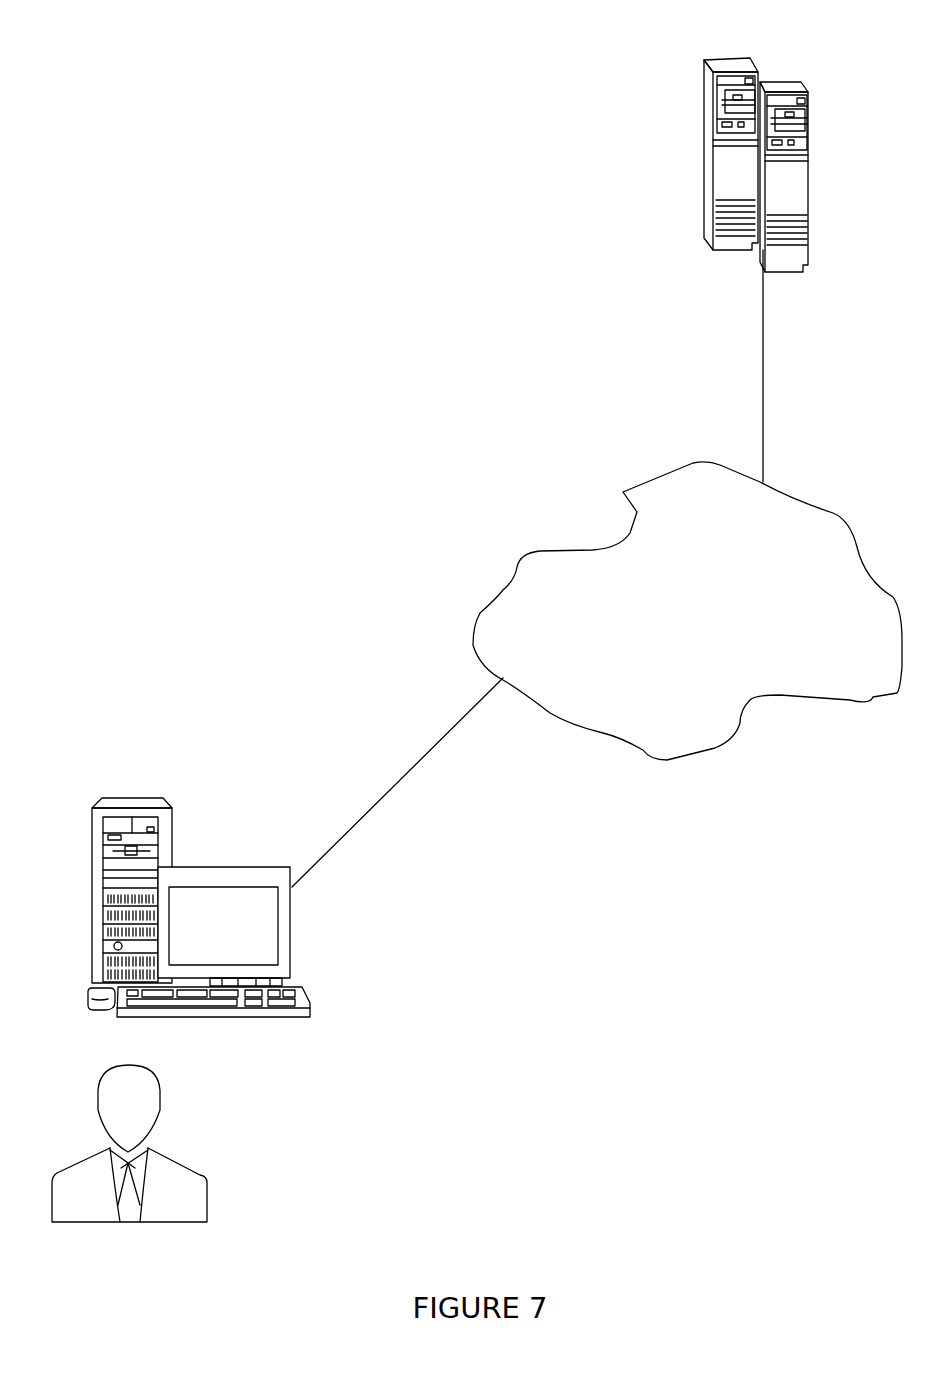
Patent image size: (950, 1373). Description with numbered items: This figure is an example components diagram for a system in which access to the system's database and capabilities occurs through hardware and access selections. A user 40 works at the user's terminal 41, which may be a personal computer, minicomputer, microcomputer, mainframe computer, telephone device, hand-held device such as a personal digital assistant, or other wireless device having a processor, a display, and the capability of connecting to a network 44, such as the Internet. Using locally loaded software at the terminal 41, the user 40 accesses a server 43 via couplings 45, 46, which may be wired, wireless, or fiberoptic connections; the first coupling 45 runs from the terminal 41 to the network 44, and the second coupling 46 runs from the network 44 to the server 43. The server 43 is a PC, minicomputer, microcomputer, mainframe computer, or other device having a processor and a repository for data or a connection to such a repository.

The user 40 is at (73, 1165).
The terminal 41 is at (95, 808).
The server 43 is at (803, 82).
The network 44 is at (630, 523).
The coupling 45 is at (408, 765).
The coupling 46 is at (760, 365).